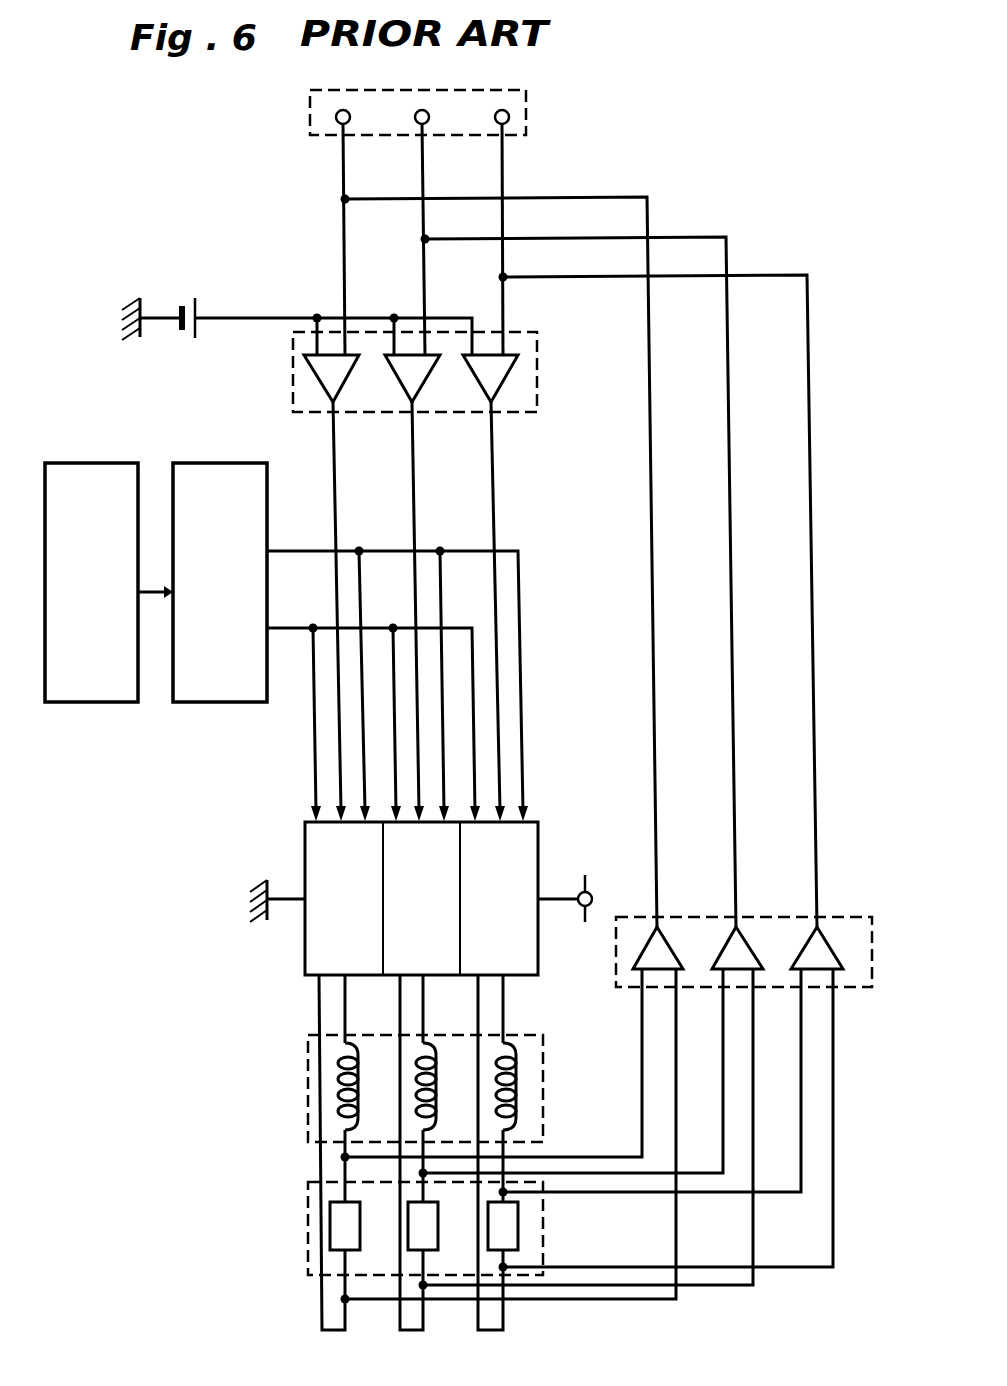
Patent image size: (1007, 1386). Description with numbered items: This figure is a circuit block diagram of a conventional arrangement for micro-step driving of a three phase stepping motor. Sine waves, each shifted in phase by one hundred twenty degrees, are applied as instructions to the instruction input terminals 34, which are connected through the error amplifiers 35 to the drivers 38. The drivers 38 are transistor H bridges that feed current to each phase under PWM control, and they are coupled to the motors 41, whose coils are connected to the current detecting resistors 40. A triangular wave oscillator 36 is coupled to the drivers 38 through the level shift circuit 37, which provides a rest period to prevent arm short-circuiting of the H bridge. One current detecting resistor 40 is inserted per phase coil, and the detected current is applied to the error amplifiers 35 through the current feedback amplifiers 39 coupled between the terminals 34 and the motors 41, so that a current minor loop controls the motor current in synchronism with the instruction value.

The instruction input terminals 34 is at (527, 96).
The error amplifiers 35 is at (293, 382).
The triangular wave oscillator 36 is at (95, 702).
The level shift circuit 37 is at (215, 702).
The drivers 38 is at (305, 955).
The current feedback amplifiers 39 is at (845, 988).
The current detecting resistors 40 is at (308, 1238).
The motors 41 is at (307, 1107).